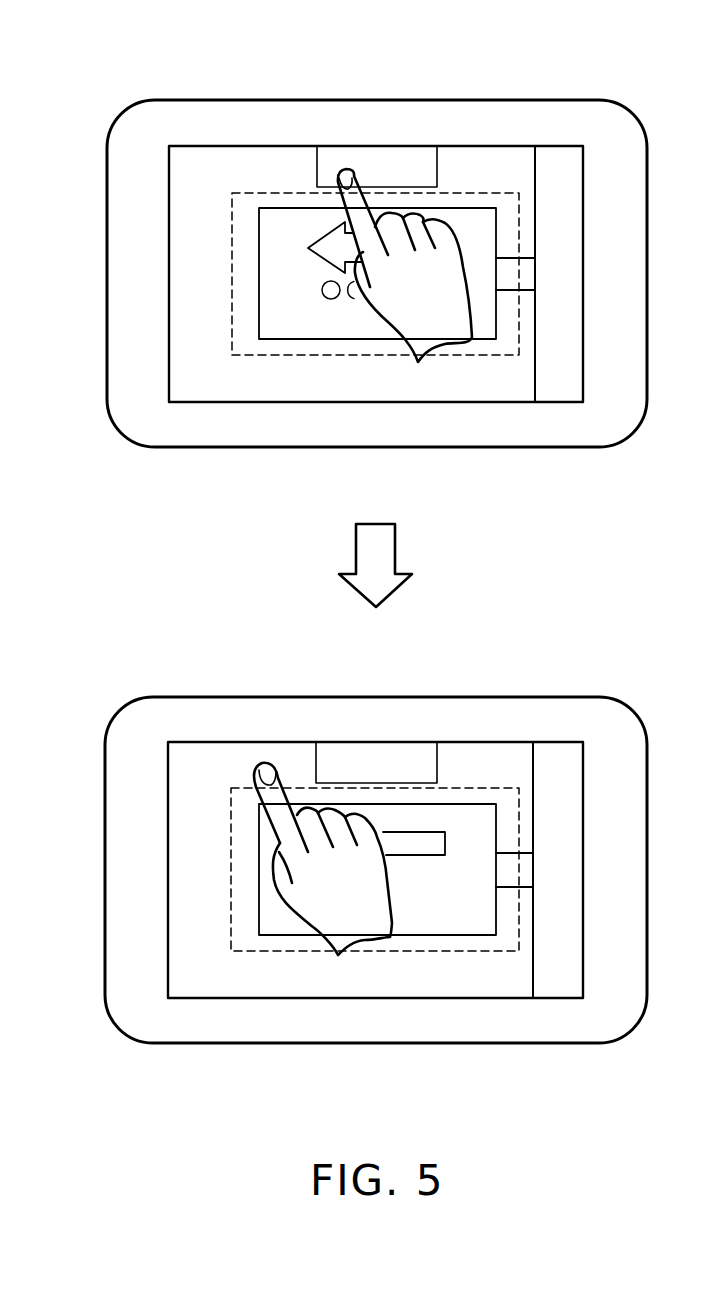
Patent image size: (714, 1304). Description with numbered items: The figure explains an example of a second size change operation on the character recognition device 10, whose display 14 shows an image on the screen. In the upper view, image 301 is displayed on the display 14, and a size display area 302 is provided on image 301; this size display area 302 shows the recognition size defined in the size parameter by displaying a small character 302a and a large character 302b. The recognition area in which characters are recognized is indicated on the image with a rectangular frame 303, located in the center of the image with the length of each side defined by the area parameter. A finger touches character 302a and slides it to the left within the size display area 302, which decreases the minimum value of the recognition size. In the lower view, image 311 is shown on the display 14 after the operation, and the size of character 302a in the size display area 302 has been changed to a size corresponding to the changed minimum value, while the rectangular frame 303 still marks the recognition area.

The character recognition device 10 is at (570, 102).
The display 14 is at (168, 342).
The image 301 is at (297, 388).
The size display area 302 is at (376, 143).
The small character 302a is at (343, 157).
The large character 302b is at (408, 155).
The rectangular frame 303 is at (367, 357).
The image 311 is at (296, 985).